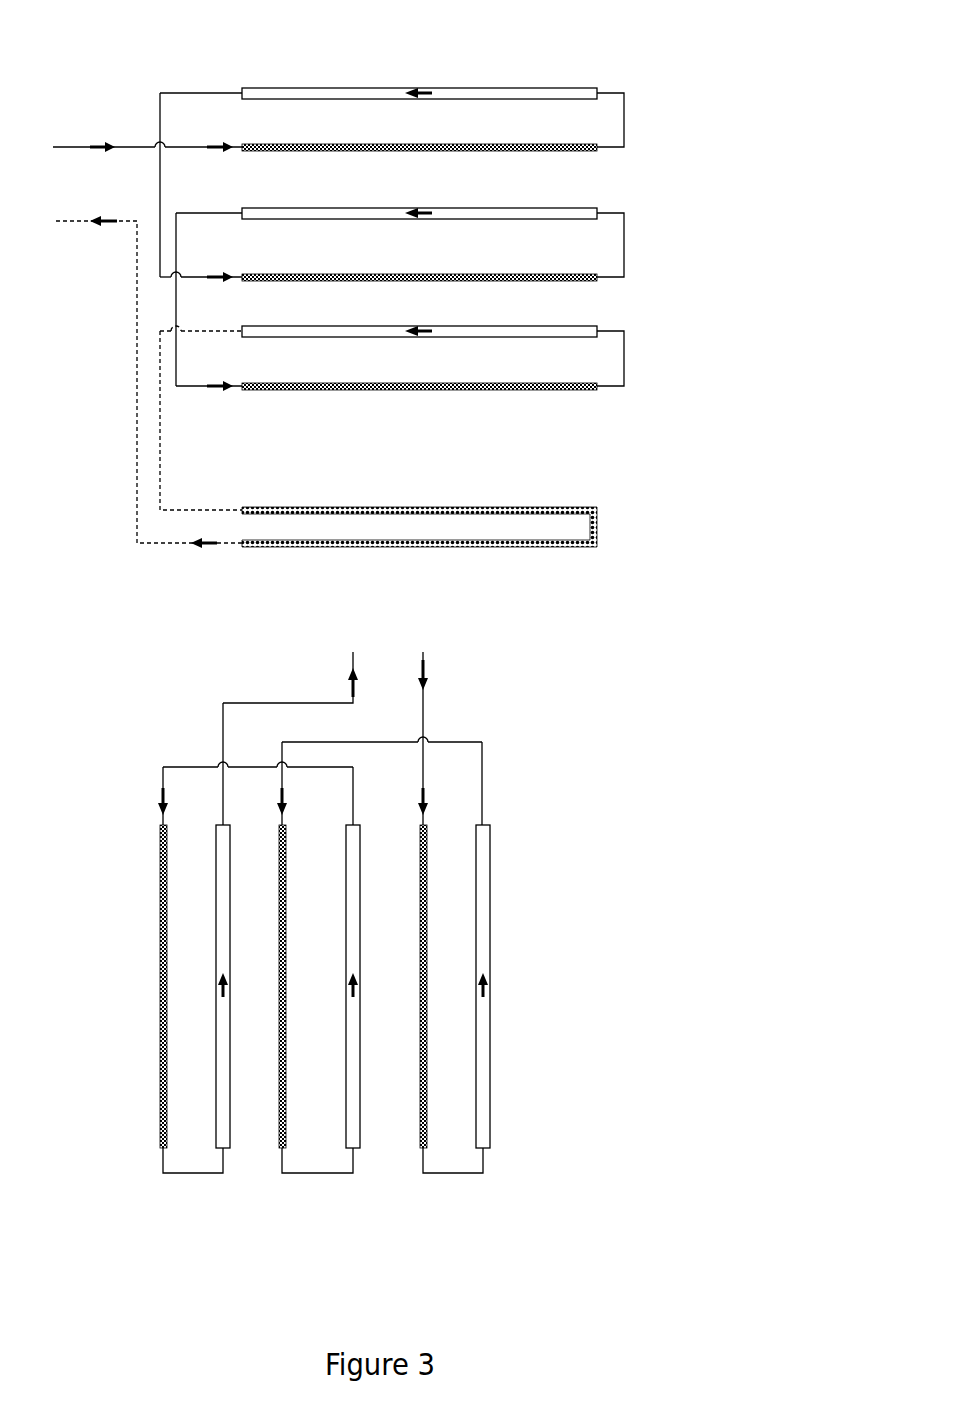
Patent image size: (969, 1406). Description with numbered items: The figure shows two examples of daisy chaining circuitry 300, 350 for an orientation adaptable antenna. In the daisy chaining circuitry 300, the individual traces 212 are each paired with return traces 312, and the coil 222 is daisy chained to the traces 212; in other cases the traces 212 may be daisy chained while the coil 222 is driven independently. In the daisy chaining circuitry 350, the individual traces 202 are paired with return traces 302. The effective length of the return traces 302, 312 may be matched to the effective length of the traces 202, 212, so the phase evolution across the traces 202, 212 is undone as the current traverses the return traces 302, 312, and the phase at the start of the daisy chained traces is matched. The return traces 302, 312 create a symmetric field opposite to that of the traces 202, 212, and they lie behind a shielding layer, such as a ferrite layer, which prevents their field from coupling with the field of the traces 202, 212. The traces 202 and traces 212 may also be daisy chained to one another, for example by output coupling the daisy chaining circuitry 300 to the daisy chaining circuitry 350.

The daisy chaining circuitry 300 is at (80, 53).
The daisy chaining circuitry 350 is at (150, 690).
The return traces 312 is at (262, 88).
The traces 212 is at (266, 144).
The coil 222 is at (266, 507).
The return traces 302 is at (216, 904).
The traces 202 is at (167, 985).